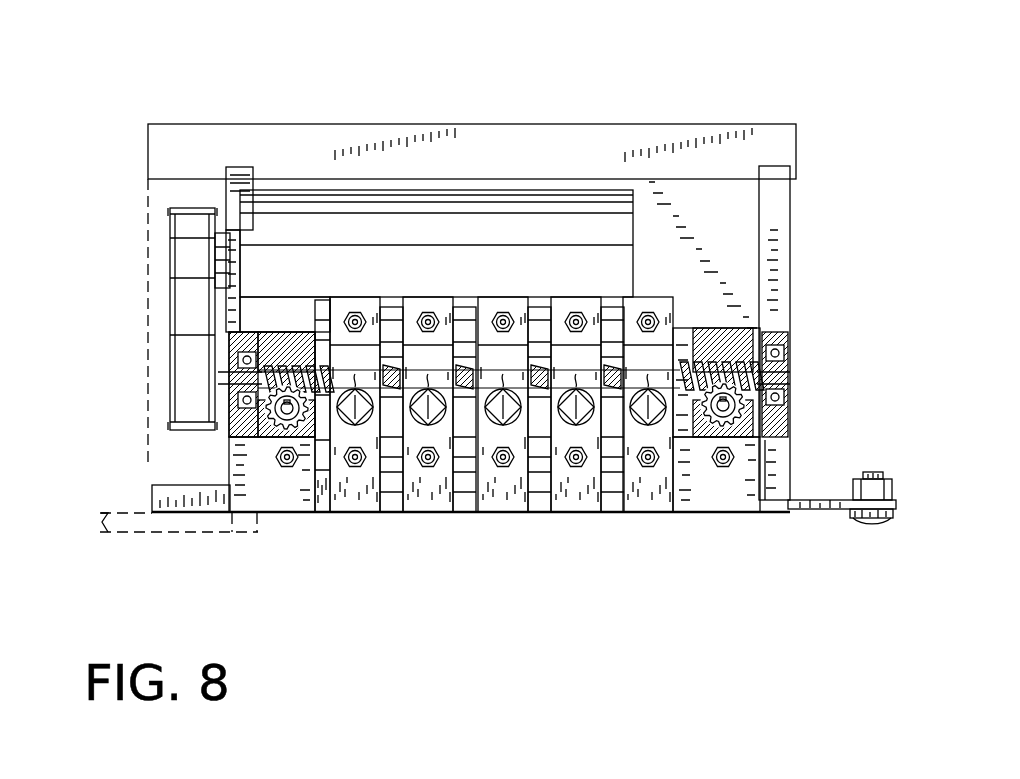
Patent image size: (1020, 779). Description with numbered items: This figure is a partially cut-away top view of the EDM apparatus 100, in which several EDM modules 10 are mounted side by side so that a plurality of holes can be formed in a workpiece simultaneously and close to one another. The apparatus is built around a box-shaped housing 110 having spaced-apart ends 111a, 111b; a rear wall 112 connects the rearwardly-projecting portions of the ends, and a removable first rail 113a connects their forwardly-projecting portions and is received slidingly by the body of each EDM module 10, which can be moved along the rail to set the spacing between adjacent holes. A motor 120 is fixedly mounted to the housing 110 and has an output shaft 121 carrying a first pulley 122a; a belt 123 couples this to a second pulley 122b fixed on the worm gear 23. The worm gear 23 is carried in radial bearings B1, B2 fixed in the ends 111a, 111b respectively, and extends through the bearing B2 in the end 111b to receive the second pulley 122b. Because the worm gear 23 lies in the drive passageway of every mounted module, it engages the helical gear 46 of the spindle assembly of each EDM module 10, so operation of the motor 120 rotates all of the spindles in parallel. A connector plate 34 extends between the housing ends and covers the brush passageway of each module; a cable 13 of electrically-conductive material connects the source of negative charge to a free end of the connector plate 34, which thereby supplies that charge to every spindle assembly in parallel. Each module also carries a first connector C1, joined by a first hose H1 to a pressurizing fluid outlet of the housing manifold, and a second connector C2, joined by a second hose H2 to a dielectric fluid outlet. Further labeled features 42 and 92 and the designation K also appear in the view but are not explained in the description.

The EDM apparatus 100 is at (487, 375).
The housing 110 is at (499, 282).
The rear wall 112 is at (358, 135).
The end 111a is at (775, 258).
The end 111b is at (240, 460).
The motor 120 is at (291, 218).
The output shaft 121 is at (228, 260).
The first pulley 122a is at (173, 230).
The second pulley 122b is at (192, 365).
The belt 123 is at (187, 293).
The bearing housing 42 is at (300, 333).
The helical gear 46 is at (240, 400).
The worm gear 23 is at (787, 388).
The cable 13 is at (884, 472).
The connector plate 34 is at (808, 500).
The first rail 113a is at (662, 514).
The EDM module 10 is at (277, 538).
The locking collar 92 is at (501, 387).
The first connector C1 is at (355, 311).
The first hose H1 is at (523, 266).
The second connector C2 is at (283, 466).
The second hose H2 is at (519, 595).
The spacer K is at (325, 455).
The radial bearing B1 is at (790, 404).
The radial bearing B2 is at (230, 405).